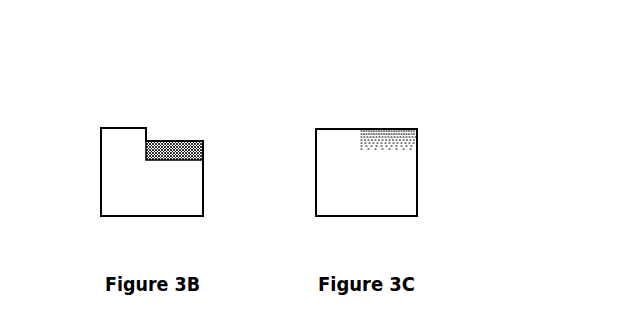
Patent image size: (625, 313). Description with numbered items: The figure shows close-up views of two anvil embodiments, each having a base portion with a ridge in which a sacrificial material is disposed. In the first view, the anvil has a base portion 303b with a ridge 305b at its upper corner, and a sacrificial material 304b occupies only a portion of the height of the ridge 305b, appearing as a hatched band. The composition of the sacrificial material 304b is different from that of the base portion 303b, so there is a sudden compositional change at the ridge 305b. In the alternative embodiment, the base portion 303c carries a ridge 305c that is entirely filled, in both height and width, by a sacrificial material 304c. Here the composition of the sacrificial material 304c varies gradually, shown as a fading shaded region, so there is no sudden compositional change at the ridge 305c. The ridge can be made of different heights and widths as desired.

In FIG. 3B, the base portion 303b is at (101, 187).
In FIG. 3B, the sacrificial material 304b is at (175, 141).
In FIG. 3B, the ridge 305b is at (203, 157).
In FIG. 3C, the base portion 303c is at (328, 198).
In FIG. 3C, the sacrificial material 304c is at (387, 132).
In FIG. 3C, the ridge 305c is at (417, 158).